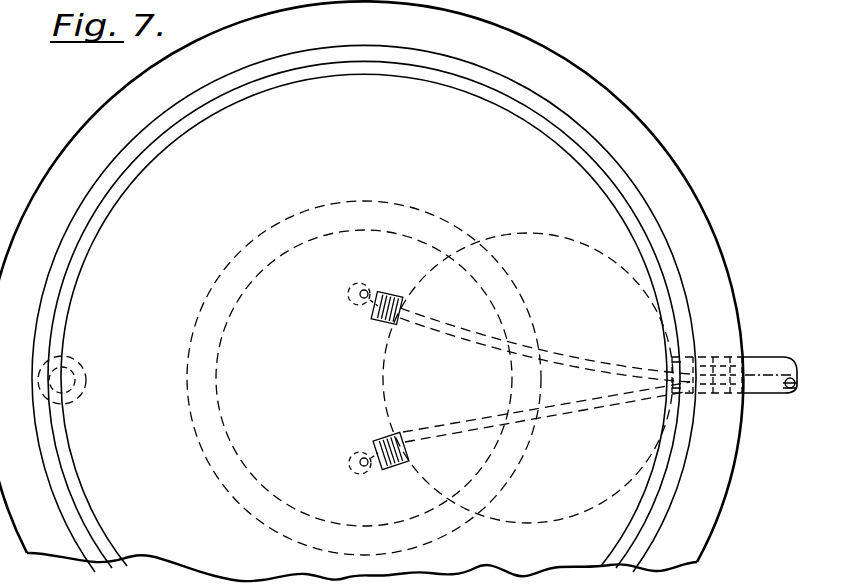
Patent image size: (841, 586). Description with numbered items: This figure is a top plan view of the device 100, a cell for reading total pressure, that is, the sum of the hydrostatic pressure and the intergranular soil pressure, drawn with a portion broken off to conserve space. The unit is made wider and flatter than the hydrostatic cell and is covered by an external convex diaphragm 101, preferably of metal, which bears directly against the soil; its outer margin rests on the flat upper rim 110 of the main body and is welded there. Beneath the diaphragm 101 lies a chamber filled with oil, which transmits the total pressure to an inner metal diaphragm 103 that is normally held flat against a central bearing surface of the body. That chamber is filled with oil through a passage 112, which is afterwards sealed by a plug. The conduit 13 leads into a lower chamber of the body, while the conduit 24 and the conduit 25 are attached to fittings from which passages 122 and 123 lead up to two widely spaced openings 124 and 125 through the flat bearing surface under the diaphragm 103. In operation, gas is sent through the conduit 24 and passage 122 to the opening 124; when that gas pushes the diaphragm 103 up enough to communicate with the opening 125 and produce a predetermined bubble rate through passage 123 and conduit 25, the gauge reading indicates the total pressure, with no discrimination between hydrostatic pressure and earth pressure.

The device 100 is at (692, 185).
The flat upper rim 110 is at (725, 572).
The external convex diaphragm 101 is at (379, 172).
The metal diaphragm 103 is at (250, 453).
The passage 112 is at (86, 378).
The conduit 13 is at (755, 358).
The conduit 25 is at (570, 357).
The conduit 24 is at (541, 401).
The passage 123 is at (363, 295).
The opening 125 is at (357, 307).
The passage 122 is at (372, 442).
The opening 124 is at (363, 467).